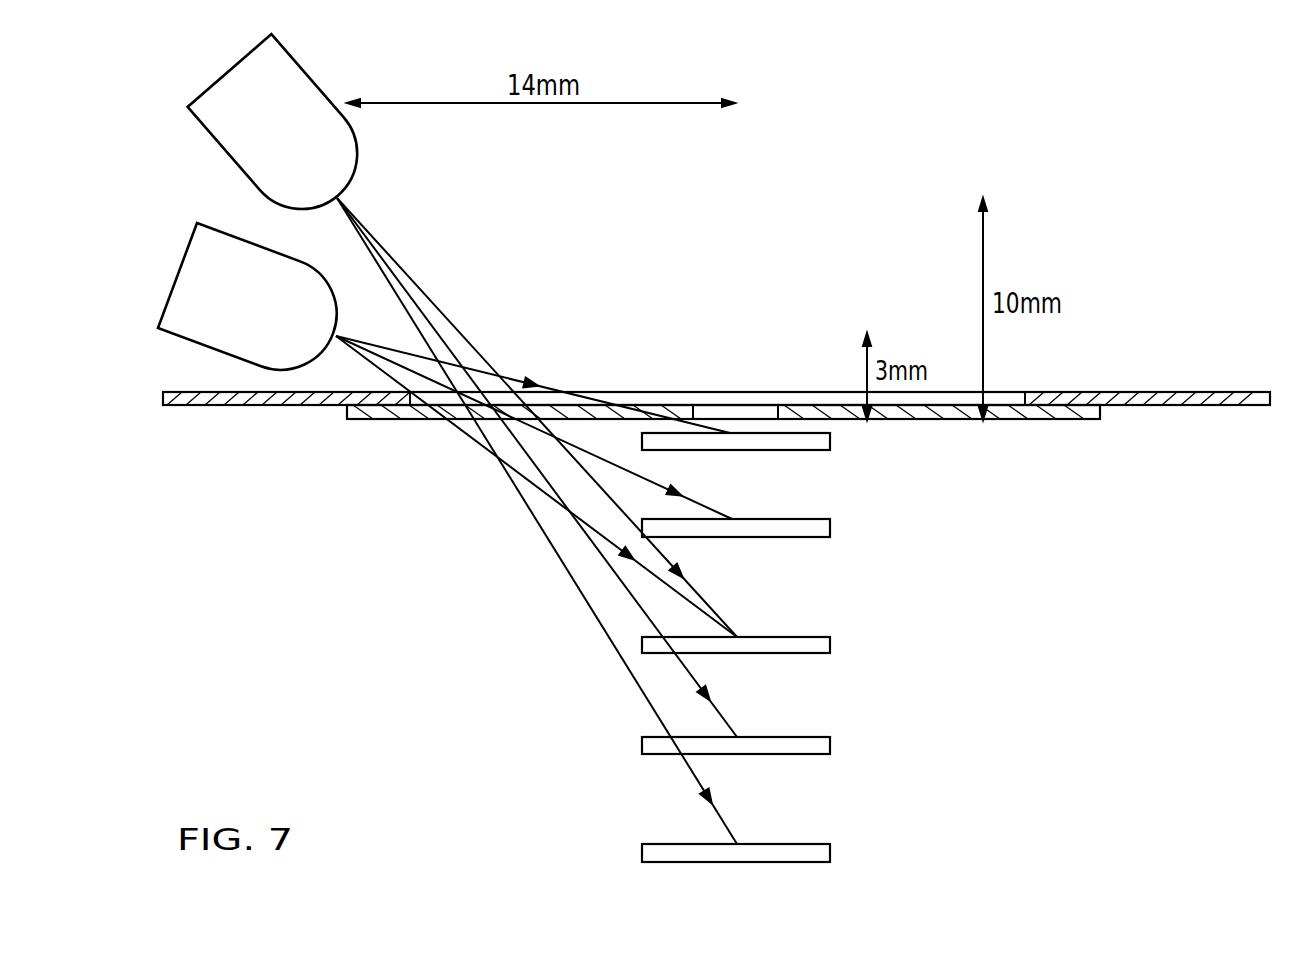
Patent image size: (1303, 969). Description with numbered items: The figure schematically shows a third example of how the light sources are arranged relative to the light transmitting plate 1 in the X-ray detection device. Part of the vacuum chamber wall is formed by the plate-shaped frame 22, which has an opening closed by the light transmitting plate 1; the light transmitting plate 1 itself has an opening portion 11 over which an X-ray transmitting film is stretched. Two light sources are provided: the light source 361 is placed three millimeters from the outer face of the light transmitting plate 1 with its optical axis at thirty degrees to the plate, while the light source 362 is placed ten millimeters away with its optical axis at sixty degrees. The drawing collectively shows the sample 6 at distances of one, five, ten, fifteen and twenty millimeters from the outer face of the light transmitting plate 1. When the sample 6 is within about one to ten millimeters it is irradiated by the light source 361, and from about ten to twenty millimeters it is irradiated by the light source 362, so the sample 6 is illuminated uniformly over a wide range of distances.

The light source 362 is at (298, 80).
The light source 361 is at (188, 267).
The frame 22 is at (1178, 398).
The light transmitting plate 1 is at (1045, 414).
The opening portion 11 is at (776, 407).
The sample 6 is at (787, 443).